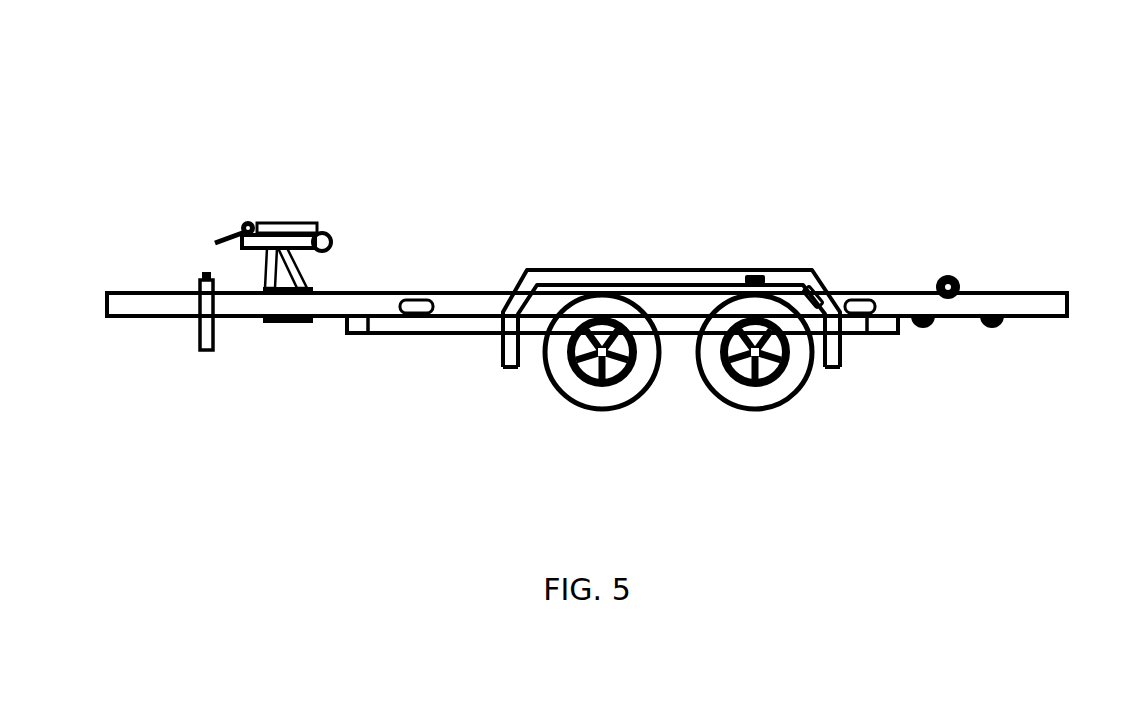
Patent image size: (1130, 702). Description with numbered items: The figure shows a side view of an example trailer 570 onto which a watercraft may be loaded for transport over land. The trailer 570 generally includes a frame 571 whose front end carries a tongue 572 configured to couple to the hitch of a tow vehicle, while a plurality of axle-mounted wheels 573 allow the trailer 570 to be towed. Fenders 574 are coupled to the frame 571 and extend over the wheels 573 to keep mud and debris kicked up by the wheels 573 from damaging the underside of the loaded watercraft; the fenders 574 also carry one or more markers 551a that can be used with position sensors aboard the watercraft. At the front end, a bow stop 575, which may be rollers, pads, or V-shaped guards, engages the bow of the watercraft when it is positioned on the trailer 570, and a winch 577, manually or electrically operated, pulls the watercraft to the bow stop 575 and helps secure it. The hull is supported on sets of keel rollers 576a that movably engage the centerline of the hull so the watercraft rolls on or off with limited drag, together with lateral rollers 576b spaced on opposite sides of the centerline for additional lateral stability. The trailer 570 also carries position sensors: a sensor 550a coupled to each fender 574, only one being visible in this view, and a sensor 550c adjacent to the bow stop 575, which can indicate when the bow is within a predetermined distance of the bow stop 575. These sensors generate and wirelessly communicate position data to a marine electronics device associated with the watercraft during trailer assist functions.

The trailer 570 is at (508, 120).
The frame 571 is at (337, 318).
The tongue 572 is at (115, 318).
The axle-mounted wheels 573 is at (755, 410).
The fenders 574 is at (628, 270).
The bow stop 575 is at (318, 230).
The keel rollers 576a is at (1001, 350).
The lateral rollers 576b is at (972, 270).
The winch 577 is at (223, 232).
The sensor 550a is at (818, 287).
The sensor 550c is at (278, 222).
The marker 551a is at (752, 272).